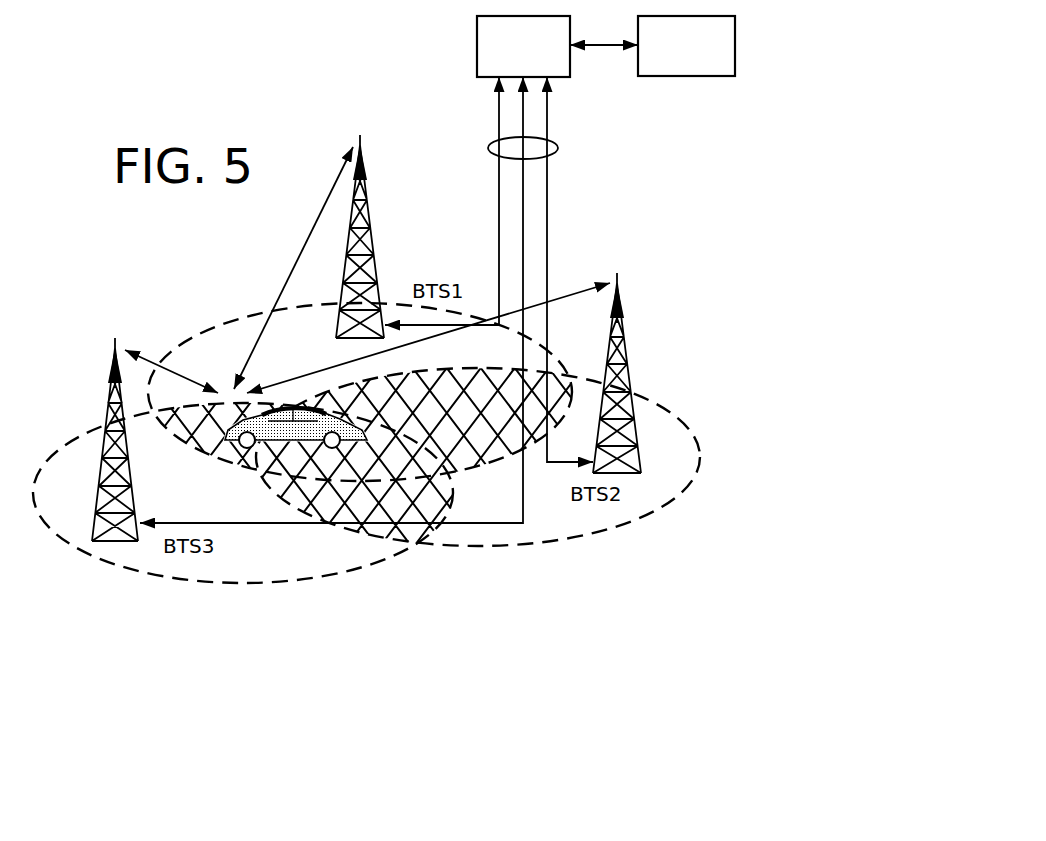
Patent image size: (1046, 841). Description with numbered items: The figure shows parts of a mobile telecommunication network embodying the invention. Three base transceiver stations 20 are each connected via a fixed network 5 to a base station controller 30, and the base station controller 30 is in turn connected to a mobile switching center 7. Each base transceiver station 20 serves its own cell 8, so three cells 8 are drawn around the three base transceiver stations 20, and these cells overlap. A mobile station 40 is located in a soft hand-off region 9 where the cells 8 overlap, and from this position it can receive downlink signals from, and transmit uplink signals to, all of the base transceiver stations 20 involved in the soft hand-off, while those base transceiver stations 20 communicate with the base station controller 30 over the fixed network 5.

The base station controller 30 is at (477, 35).
The mobile switching center 7 is at (693, 77).
The fixed network 5 is at (558, 148).
The base transceiver station 20 is at (368, 210).
The cell 8 is at (229, 320).
The soft hand-off region 9 is at (412, 542).
The mobile station 40 is at (249, 449).